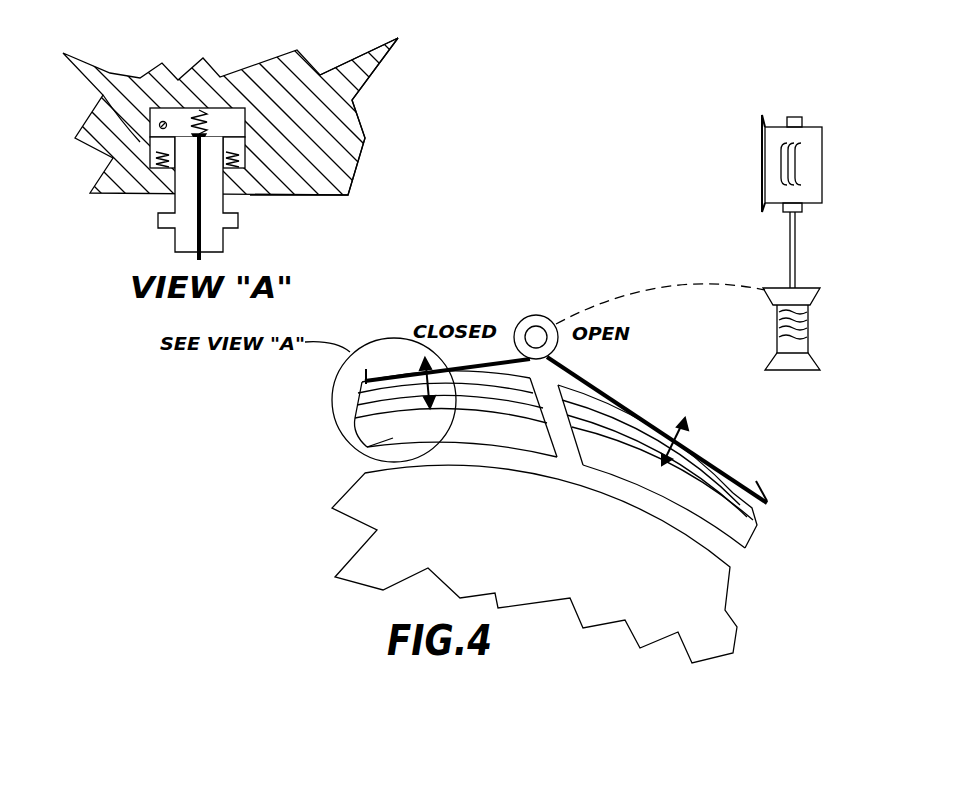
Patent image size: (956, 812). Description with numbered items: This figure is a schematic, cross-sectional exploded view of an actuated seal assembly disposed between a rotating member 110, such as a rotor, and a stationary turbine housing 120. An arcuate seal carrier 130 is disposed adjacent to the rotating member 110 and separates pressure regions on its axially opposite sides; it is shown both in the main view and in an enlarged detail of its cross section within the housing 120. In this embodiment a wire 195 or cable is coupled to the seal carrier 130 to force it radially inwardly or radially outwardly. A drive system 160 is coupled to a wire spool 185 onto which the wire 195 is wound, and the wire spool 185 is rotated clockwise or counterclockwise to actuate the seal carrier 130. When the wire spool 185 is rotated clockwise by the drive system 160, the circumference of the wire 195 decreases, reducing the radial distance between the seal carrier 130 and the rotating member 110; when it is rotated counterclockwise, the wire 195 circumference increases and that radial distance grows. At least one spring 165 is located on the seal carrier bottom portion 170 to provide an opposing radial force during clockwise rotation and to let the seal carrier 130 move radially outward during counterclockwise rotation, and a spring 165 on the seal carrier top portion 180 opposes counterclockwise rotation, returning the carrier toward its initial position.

The rotating member 110 is at (387, 495).
The stationary turbine housing 120 is at (311, 120).
The arcuate seal carrier 130 is at (148, 143).
The drive system 160 is at (823, 200).
The spring 165 is at (212, 108).
The seal carrier bottom portion 170 is at (148, 190).
The seal carrier top portion 180 is at (178, 130).
The wire spool 185 is at (518, 318).
The wire 195 is at (150, 108).